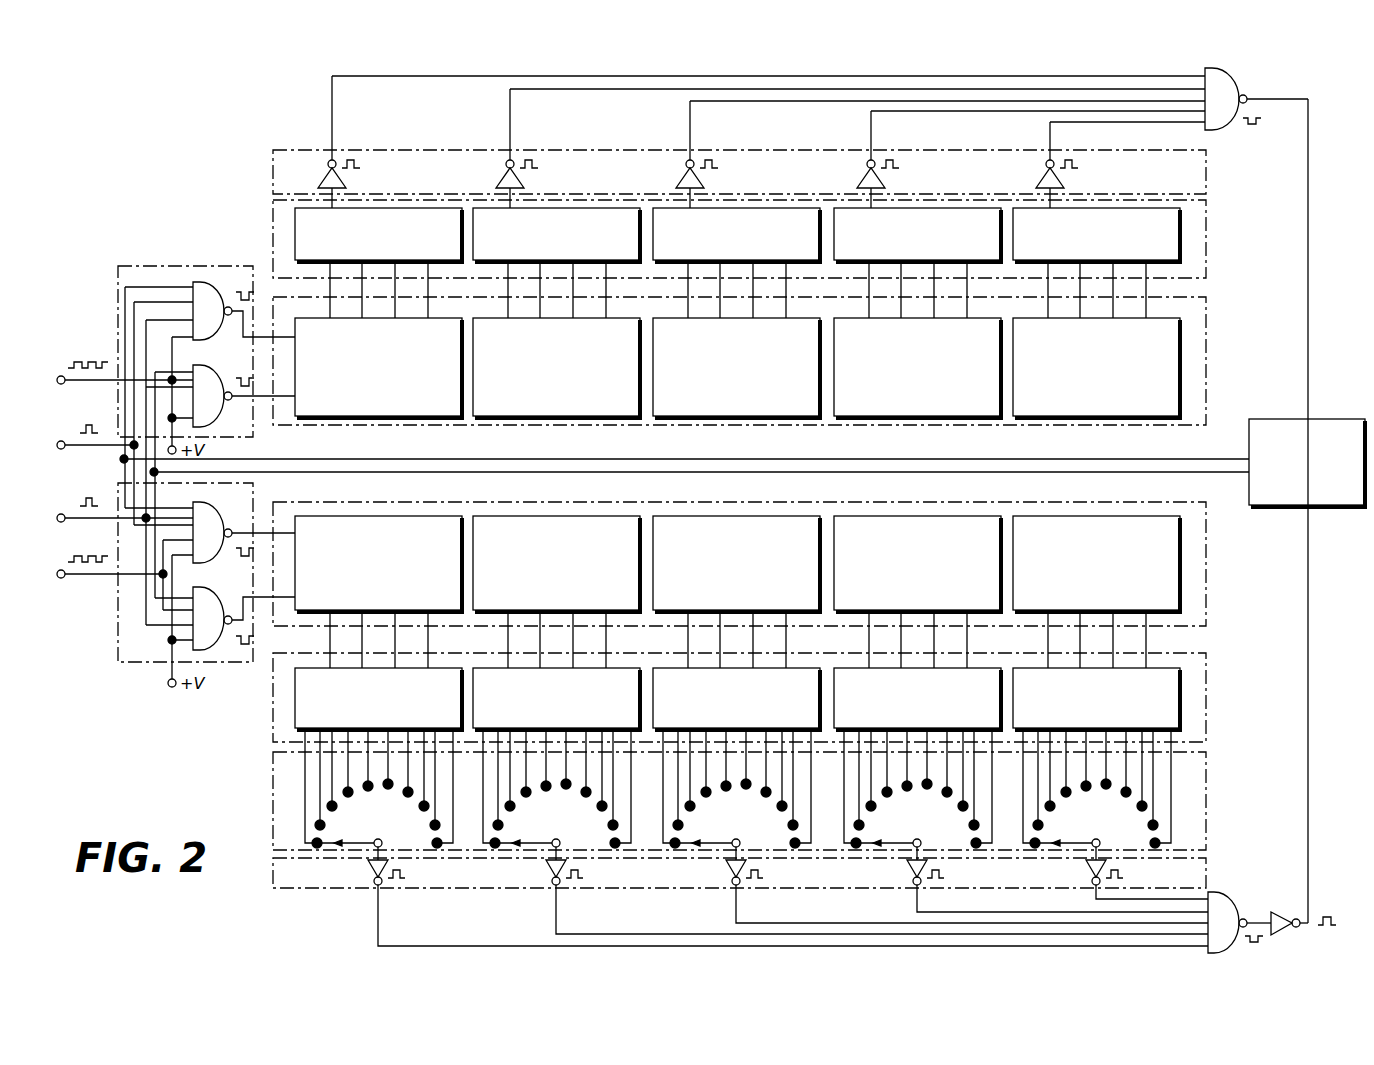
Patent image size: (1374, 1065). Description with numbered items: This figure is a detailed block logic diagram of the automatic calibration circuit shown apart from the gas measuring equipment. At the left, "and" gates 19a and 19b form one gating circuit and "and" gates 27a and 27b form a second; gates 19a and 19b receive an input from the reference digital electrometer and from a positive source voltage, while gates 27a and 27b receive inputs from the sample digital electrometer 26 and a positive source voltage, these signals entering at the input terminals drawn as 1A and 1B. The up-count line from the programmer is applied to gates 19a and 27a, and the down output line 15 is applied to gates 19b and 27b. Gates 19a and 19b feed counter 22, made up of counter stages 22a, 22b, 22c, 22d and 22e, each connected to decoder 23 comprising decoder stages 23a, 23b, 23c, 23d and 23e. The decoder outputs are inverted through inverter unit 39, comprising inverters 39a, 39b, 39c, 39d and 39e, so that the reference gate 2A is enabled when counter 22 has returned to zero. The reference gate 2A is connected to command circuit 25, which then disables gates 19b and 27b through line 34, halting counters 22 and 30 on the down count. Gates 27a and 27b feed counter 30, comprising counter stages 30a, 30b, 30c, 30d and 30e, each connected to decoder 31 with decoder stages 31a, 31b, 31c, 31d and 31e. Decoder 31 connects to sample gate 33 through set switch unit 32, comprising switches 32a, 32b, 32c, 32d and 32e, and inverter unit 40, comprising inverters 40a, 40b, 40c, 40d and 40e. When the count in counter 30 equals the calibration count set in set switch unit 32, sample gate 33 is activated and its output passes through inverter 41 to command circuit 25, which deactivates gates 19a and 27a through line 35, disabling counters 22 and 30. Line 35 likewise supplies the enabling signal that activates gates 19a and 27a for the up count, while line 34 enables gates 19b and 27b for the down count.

The first input terminal 1A is at (64, 450).
The second input terminal 1B is at (64, 385).
The down output line 15 is at (64, 523).
The sample digital electrometer 26 is at (64, 579).
The and gate 19a is at (212, 282).
The and gate 19b is at (222, 418).
The and gate 27a is at (222, 510).
The and gate 27b is at (218, 646).
The reference gate 2A is at (1205, 125).
The inverter unit 39 is at (1212, 166).
The inverter 39a is at (350, 180).
The inverter 39b is at (528, 180).
The inverter 39c is at (708, 180).
The inverter 39d is at (889, 180).
The inverter 39e is at (1068, 180).
The decoder 23 is at (1212, 246).
The decoder stage 23a is at (400, 208).
The decoder stage 23b is at (578, 208).
The decoder stage 23c is at (758, 208).
The decoder stage 23d is at (939, 208).
The decoder stage 23e is at (1118, 208).
The counter 22 is at (1212, 338).
The counter stage 22a is at (433, 417).
The counter stage 22b is at (611, 417).
The counter stage 22c is at (791, 417).
The counter stage 22d is at (972, 417).
The counter stage 22e is at (1151, 417).
The line 34 is at (718, 459).
The line 35 is at (772, 472).
The command circuit 25 is at (1362, 400).
The counter 30 is at (1212, 560).
The counter stage 30a is at (432, 516).
The counter stage 30b is at (610, 516).
The counter stage 30c is at (790, 516).
The counter stage 30d is at (971, 516).
The counter stage 30e is at (1150, 516).
The decoder 31 is at (1212, 657).
The decoder stage 31a is at (437, 668).
The decoder stage 31b is at (615, 668).
The decoder stage 31c is at (795, 668).
The decoder stage 31d is at (976, 668).
The decoder stage 31e is at (1155, 668).
The set switch unit 32 is at (1212, 760).
The switch 32a is at (403, 821).
The switch 32b is at (581, 821).
The switch 32c is at (761, 821).
The switch 32d is at (942, 821).
The switch 32e is at (1121, 821).
The inverter unit 40 is at (1212, 860).
The inverter 40a is at (366, 871).
The inverter 40b is at (544, 871).
The inverter 40c is at (724, 871).
The inverter 40d is at (905, 871).
The inverter 40e is at (1084, 871).
The sample gate 33 is at (1232, 953).
The inverter 41 is at (1296, 919).